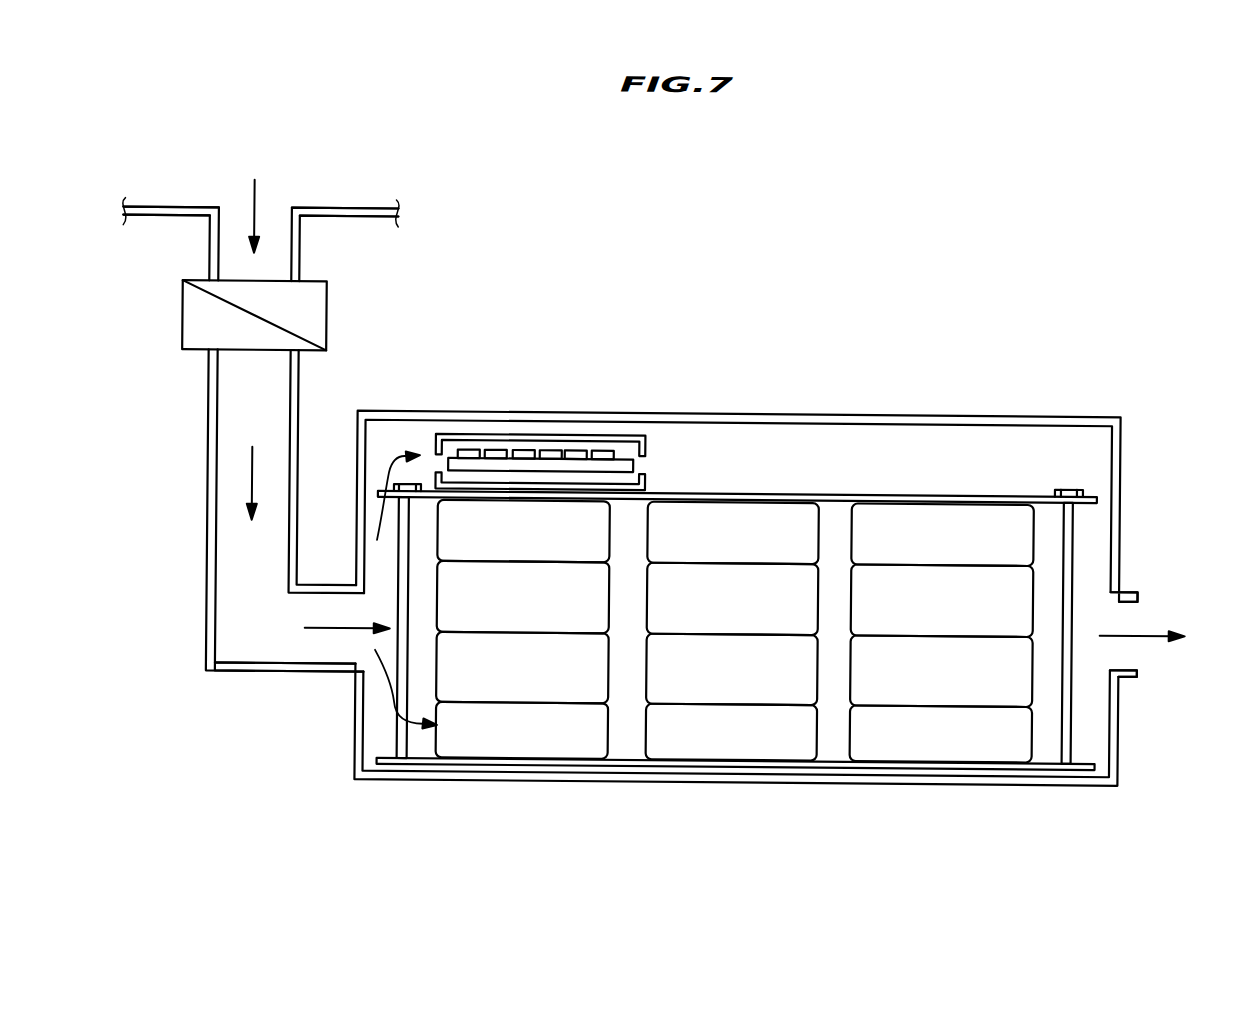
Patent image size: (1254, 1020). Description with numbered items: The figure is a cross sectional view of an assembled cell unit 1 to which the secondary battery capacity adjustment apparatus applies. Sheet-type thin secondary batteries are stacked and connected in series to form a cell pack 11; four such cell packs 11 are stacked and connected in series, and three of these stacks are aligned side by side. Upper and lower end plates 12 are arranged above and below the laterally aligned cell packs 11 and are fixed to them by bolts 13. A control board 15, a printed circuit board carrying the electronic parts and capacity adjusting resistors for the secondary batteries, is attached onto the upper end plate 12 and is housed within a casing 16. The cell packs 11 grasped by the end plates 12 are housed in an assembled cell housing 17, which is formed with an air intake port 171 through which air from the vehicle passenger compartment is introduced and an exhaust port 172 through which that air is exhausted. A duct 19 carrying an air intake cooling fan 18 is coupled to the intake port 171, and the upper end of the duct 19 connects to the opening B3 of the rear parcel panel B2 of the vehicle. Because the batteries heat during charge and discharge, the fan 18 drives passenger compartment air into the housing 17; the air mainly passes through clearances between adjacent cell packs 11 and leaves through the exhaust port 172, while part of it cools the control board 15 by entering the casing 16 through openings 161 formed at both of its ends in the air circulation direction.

The assembled cell unit 1 is at (1008, 289).
The cell pack 11 is at (582, 529).
The end plate 12 is at (838, 492).
The bolt 13 is at (400, 698).
The control board 15 is at (534, 466).
The casing 16 is at (596, 438).
The opening 161 is at (436, 466).
The assembled cell housing 17 is at (940, 416).
The air intake port 171 is at (363, 666).
The exhaust port 172 is at (1133, 660).
The fan 18 is at (304, 316).
The duct 19 is at (206, 475).
The rear parcel panel B2 is at (168, 212).
The opening B3 is at (280, 229).